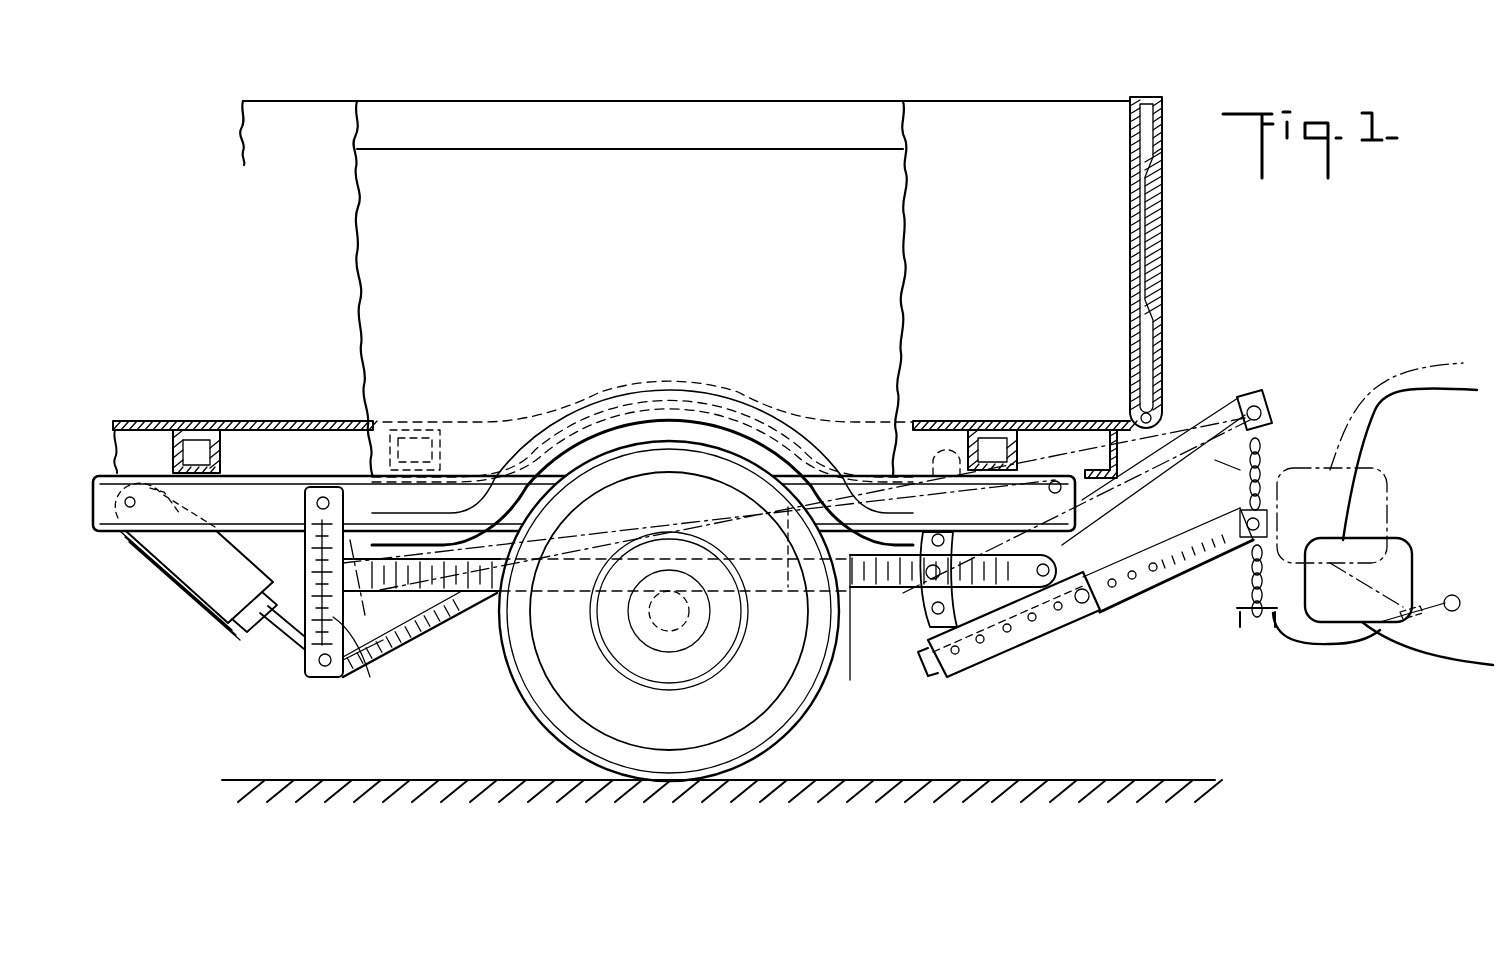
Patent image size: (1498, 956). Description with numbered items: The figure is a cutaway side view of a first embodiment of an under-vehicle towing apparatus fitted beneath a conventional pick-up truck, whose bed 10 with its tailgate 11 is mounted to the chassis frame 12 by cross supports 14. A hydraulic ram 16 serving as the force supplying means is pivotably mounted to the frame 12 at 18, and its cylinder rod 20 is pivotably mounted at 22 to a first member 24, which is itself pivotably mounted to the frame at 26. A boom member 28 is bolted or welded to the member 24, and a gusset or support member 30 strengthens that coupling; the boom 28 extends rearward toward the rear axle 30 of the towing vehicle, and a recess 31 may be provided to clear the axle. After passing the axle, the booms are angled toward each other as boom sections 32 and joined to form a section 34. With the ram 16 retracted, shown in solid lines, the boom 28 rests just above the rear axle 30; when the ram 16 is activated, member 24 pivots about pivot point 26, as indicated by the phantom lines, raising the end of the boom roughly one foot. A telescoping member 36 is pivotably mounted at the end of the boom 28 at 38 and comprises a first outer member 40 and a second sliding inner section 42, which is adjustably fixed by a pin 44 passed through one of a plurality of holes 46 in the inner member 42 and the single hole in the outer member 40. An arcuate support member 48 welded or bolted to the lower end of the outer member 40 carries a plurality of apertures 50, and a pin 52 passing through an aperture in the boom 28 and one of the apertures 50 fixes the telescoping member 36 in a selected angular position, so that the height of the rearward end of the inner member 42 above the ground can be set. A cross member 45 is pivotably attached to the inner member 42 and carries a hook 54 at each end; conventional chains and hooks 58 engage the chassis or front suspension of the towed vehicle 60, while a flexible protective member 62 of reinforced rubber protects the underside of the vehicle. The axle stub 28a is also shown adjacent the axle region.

The bed 10 is at (727, 125).
The tailgate 11 is at (1148, 255).
The frame 12 is at (443, 490).
The cross supports 14 is at (220, 440).
The hydraulic rams 16 is at (208, 597).
The pivot mounting of hydraulic rams 18 is at (130, 508).
The cylinder rod 20 is at (282, 638).
The pivot mounting of cylinder rod 22 is at (327, 666).
The first member 24 is at (383, 663).
The pivot point of first member 26 is at (323, 497).
The boom member 28 is at (438, 577).
The axle stub 28a is at (788, 590).
The gusset or support member / rear axle 30 is at (423, 623).
The recess 31 is at (666, 597).
The boom sections 32 is at (853, 640).
The section 34 is at (1003, 632).
The telescoping member 36 is at (1062, 642).
The pivot mounting of telescoping member 38 is at (1052, 571).
The first outer member 40 is at (974, 665).
The second sliding inner section 42 is at (1213, 458).
The pin 44 is at (1091, 602).
The cross member 45 is at (1258, 414).
The holes 46 is at (1135, 588).
The support member 48 is at (940, 627).
The apertures 50 is at (937, 608).
The pin 52 is at (928, 580).
The hook 54 is at (1262, 428).
The hooks 58 is at (1450, 596).
The towed vehicle 60 is at (1375, 495).
The flexible protective member 62 is at (1327, 642).